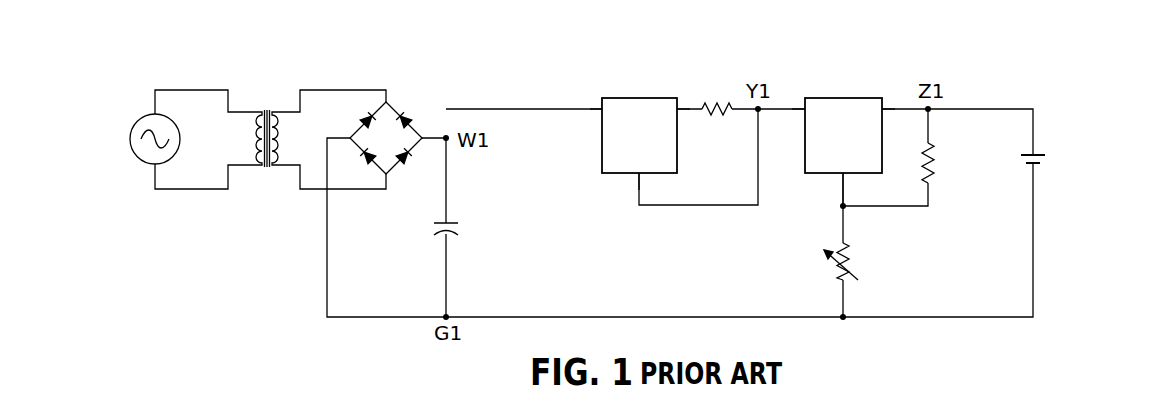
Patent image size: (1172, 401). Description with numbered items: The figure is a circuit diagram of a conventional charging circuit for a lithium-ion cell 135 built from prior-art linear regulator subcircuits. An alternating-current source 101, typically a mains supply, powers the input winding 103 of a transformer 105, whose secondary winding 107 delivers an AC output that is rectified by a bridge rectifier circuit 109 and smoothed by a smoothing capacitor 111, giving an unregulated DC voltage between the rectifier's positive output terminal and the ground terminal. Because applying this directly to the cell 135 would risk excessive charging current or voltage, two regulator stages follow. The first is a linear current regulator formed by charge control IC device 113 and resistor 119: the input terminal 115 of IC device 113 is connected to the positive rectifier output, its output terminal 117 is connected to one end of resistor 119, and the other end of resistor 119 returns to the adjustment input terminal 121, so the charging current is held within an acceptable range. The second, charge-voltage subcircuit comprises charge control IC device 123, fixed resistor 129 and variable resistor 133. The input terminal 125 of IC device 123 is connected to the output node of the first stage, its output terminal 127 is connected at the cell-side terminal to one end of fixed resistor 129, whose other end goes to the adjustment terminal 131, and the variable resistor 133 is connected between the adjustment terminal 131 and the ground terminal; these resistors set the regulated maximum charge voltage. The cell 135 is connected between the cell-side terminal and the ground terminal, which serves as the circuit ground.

The alternating-current source 101 is at (148, 163).
The input winding 103 is at (247, 167).
The transformer 105 is at (267, 111).
The secondary winding 107 is at (290, 167).
The bridge rectifier circuit 109 is at (395, 107).
The smoothing capacitor 111 is at (458, 229).
The charge control integrated circuit device 113 is at (645, 98).
The input terminal 115 is at (602, 108).
The output terminal 117 is at (683, 107).
The resistor 119 is at (713, 115).
The adjustment input terminal 121 is at (638, 177).
The charge control IC device 123 is at (838, 98).
The input terminal 125 is at (805, 108).
The output terminal 127 is at (882, 108).
The fixed resistor 129 is at (937, 170).
The adjustment terminal 131 is at (842, 175).
The variable resistor 133 is at (852, 263).
The lithium-ion cell 135 is at (1047, 158).